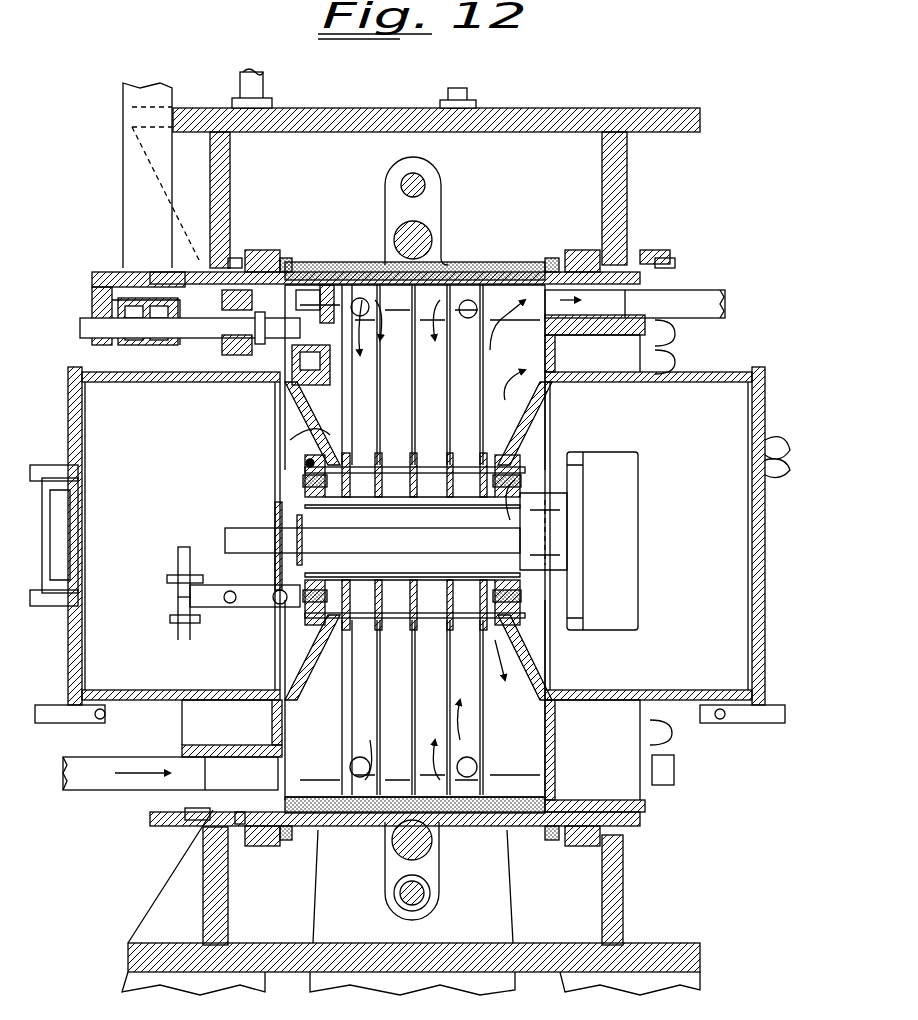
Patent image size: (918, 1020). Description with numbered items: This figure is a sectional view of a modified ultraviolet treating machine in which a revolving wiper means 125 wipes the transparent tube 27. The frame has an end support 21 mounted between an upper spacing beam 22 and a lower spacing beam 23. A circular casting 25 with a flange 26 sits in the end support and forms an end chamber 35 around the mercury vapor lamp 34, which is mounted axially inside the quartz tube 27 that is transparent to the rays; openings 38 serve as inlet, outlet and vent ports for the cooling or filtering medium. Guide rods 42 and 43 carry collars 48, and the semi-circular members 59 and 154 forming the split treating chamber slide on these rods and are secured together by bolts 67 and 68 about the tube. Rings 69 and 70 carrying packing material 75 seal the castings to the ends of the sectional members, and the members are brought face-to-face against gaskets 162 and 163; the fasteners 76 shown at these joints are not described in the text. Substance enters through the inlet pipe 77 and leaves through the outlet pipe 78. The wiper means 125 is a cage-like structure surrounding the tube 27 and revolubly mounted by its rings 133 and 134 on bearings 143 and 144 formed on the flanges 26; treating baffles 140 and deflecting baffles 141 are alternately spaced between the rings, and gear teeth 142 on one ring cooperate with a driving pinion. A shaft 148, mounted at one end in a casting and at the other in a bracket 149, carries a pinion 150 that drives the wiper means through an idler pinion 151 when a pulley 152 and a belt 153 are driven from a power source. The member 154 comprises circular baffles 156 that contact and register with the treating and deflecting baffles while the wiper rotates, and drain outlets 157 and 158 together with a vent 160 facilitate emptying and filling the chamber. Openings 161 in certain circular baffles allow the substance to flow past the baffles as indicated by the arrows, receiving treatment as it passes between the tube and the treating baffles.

The end support 21 is at (625, 872).
The upper spacing beam 22 is at (367, 132).
The lower spacing beam 23 is at (232, 165).
The casting 25 is at (578, 335).
The flange 26 is at (290, 420).
The transparent tube 27 is at (444, 508).
The mercury vapor lamp 34 is at (372, 545).
The end chamber 35 is at (410, 547).
The opening 38 is at (68, 415).
The guide rod 42 is at (432, 236).
The guide rod 43 is at (430, 850).
The collar 48 is at (398, 232).
The semi-circular member 59 is at (406, 540).
The bolt 67 is at (428, 185).
The bolt 68 is at (400, 893).
The ring 69 is at (575, 250).
The ring 70 is at (260, 250).
The packing material 75 is at (286, 258).
The bolt 76 is at (236, 258).
The inlet pipe 77 is at (100, 790).
The outlet pipe 78 is at (705, 290).
The wiper means 125 is at (392, 465).
The ring 133 is at (303, 470).
The ring 134 is at (505, 450).
The treating baffle 140 is at (422, 465).
The deflecting baffle 141 is at (394, 508).
The gear teeth 142 is at (303, 460).
The bearing 143 is at (350, 500).
The bearing 144 is at (520, 470).
The shaft 148 is at (186, 332).
The bracket 149 is at (92, 287).
The pinion 150 is at (278, 320).
The idler pinion 151 is at (300, 388).
The pulley 152 is at (125, 350).
The belt 153 is at (123, 219).
The semi-circular member 154 is at (326, 260).
The circular baffle 156 is at (375, 370).
The drain outlet 157 is at (352, 760).
The drain outlet 158 is at (476, 762).
The vent 160 is at (478, 308).
The opening 161 is at (368, 298).
The gasket 162 is at (336, 826).
The gasket 163 is at (355, 265).